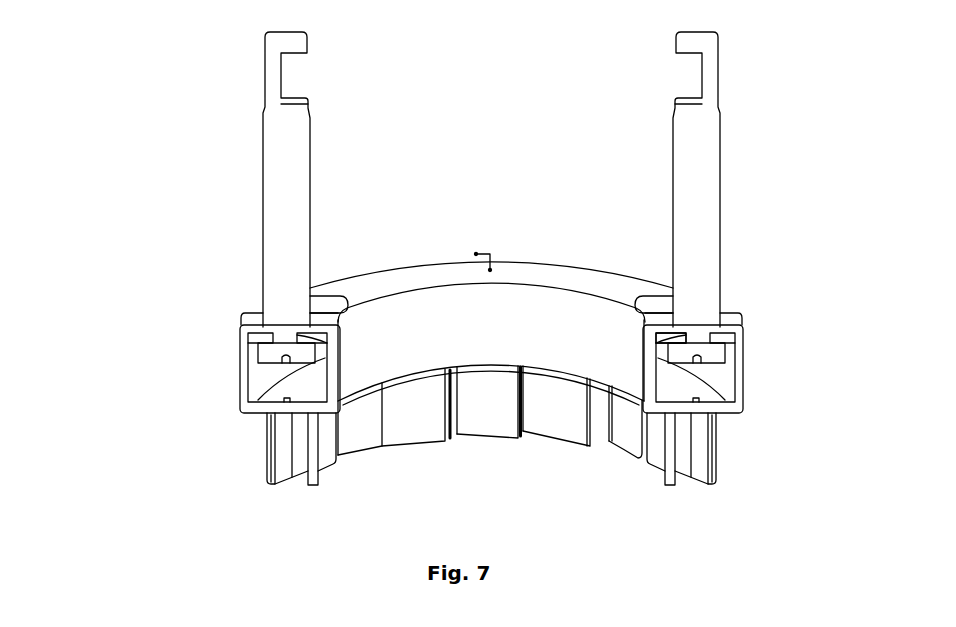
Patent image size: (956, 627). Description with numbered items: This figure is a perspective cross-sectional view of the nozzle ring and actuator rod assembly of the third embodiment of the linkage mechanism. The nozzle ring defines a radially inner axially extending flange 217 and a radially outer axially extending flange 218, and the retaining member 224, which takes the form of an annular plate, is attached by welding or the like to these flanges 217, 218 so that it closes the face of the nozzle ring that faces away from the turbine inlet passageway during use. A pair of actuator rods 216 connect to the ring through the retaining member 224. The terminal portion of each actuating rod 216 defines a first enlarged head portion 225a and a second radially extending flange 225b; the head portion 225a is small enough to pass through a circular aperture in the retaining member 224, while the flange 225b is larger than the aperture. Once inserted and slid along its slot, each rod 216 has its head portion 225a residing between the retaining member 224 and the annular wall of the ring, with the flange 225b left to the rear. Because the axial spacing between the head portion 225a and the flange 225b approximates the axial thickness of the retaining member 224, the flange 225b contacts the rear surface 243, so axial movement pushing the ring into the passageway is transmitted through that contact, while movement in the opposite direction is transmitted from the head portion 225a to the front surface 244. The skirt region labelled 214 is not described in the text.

The actuator rod 216 is at (263, 130).
The radially extending flange 225b is at (247, 313).
The enlarged head portion 225a is at (258, 356).
The radially outer axially extending flange 218 is at (238, 383).
The rear surface 243 is at (403, 276).
The retaining member 224 is at (526, 270).
The radially inner axially extending flange 217 is at (583, 327).
The skirt vanes 214 is at (412, 443).
The front surface 244 is at (663, 338).